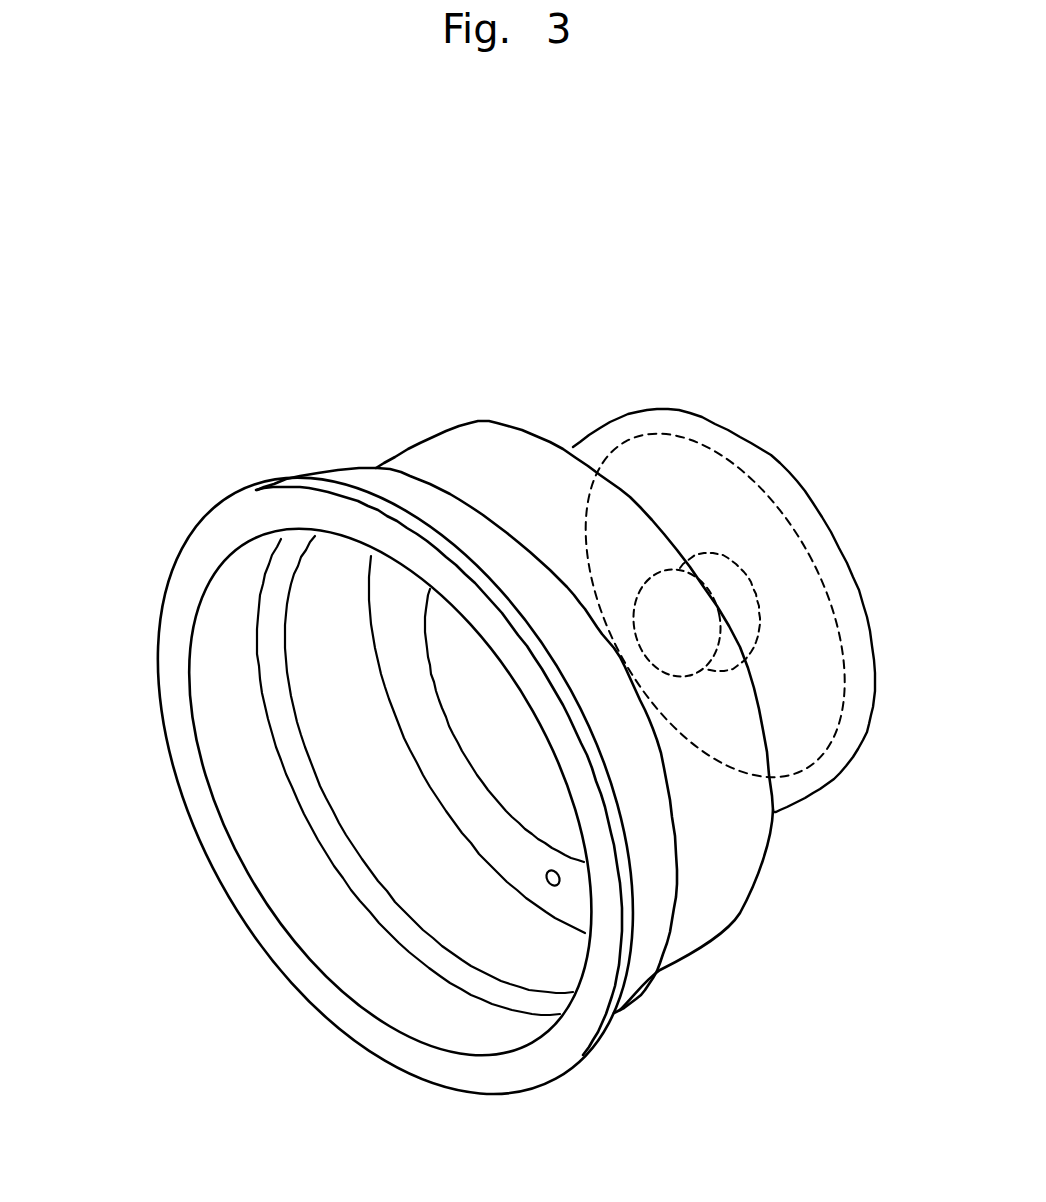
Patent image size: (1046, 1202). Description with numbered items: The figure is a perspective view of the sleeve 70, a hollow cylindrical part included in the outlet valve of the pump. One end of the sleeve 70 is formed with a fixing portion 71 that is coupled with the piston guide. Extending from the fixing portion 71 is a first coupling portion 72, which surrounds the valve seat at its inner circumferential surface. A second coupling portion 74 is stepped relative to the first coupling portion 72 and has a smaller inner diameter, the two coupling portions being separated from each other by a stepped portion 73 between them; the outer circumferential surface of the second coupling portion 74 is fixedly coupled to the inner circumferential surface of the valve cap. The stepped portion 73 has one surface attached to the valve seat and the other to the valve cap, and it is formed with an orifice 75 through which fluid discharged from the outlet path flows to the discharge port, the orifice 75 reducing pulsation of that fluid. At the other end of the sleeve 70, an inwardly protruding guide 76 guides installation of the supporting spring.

The sleeve 70 is at (503, 373).
The fixing portion 71 is at (203, 553).
The first coupling portion 72 is at (703, 915).
The stepped portion 73 is at (772, 840).
The second coupling portion 74 is at (787, 570).
The orifice 75 is at (547, 883).
The guide 76 is at (673, 597).